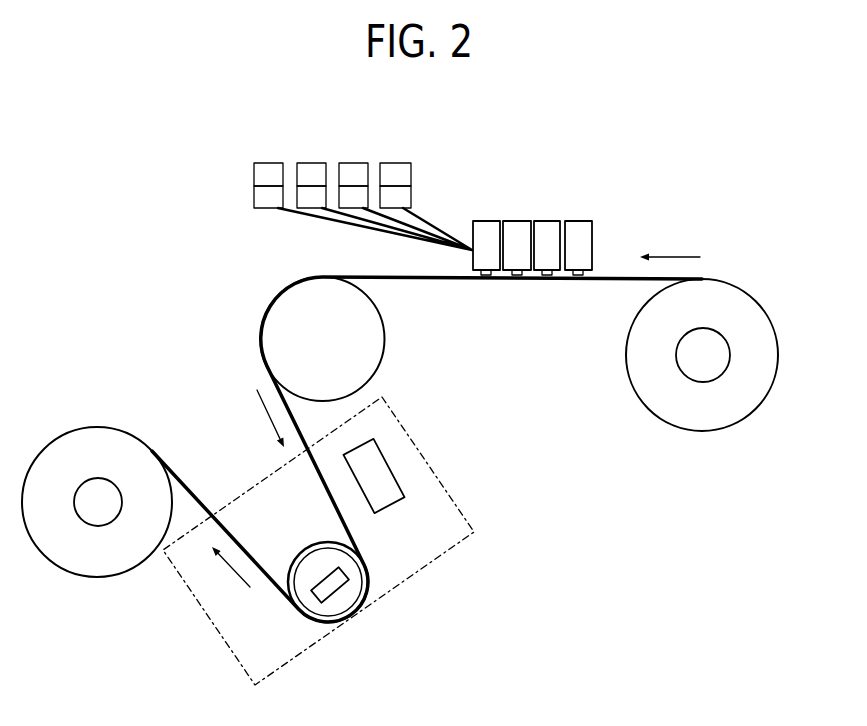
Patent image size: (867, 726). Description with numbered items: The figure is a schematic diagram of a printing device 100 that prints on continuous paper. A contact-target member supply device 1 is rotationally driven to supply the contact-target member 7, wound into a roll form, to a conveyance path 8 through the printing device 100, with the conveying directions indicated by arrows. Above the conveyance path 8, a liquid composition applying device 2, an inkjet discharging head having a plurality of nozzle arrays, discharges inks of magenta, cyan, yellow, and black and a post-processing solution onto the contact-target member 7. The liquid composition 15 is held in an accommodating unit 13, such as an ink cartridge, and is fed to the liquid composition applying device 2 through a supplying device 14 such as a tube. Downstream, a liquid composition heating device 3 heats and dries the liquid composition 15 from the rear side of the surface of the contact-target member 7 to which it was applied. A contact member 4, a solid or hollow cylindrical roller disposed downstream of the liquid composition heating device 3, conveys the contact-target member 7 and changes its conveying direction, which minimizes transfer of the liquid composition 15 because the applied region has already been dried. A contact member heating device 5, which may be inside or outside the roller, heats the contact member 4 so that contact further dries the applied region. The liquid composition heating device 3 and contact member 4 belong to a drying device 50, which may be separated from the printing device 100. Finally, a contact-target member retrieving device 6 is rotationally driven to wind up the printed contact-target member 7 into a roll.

The printing device 100 is at (622, 189).
The contact-target member supply device 1 is at (722, 352).
The liquid composition applying device 2 is at (577, 220).
The liquid composition heating device 3 is at (383, 478).
The contact member 4 is at (310, 563).
The contact member heating device 5 is at (327, 590).
The contact-target member retrieving device 6 is at (90, 487).
The contact-target member 7 is at (647, 367).
The conveyance path 8 is at (428, 281).
The accommodating unit 13 is at (395, 170).
The supplying device 14 is at (430, 221).
The liquid composition 15 is at (395, 200).
The drying device 50 is at (463, 515).